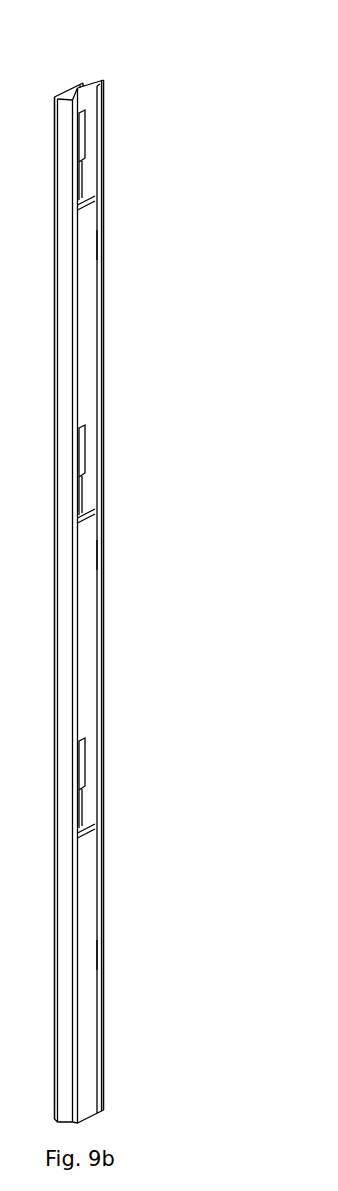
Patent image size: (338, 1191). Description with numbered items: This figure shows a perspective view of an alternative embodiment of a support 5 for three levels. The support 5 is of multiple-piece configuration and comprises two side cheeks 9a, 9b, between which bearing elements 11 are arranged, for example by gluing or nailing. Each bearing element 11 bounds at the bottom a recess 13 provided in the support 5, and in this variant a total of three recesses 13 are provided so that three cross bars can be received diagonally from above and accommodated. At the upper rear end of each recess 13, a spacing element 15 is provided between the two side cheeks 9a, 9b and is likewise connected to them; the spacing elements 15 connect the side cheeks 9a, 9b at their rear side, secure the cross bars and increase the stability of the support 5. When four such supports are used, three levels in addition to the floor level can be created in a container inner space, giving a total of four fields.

The support 5 is at (64, 74).
The side cheek 9a is at (104, 326).
The side cheek 9b is at (57, 424).
The bearing element 11 is at (92, 244).
The recess 13 is at (88, 187).
The spacing element 15 is at (84, 118).